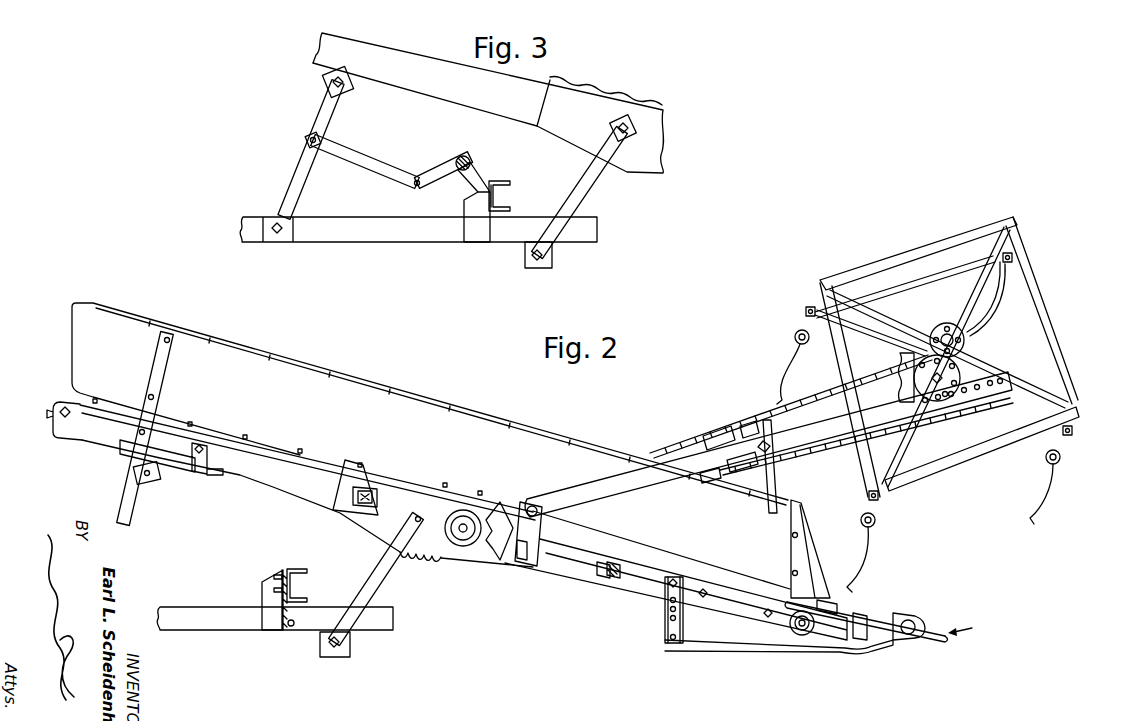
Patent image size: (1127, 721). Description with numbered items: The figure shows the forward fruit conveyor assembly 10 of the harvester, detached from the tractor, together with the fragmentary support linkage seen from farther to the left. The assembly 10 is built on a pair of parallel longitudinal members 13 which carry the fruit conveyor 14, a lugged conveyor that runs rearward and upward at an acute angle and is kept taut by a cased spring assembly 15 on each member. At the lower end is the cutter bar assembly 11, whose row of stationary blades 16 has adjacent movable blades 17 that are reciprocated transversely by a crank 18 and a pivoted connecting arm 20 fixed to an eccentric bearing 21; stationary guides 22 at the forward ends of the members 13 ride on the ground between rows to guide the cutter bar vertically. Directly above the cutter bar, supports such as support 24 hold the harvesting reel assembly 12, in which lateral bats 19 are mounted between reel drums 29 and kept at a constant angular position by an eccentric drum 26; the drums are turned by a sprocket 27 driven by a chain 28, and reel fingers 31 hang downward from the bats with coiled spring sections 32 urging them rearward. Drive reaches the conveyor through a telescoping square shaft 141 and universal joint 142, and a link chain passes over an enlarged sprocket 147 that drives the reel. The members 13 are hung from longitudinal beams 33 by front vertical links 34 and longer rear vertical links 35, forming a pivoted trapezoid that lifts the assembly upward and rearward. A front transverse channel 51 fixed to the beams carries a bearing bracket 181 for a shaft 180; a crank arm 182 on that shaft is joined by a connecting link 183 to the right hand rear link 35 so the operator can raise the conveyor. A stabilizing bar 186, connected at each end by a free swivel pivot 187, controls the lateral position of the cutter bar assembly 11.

In FIG. 3, the fruit conveyor assembly 10 is at (670, 142).
In FIG. 2, the fruit conveyor assembly 10 is at (507, 415).
In FIG. 2, the cutter bar assembly 11 is at (970, 627).
In FIG. 2, the harvesting reel assembly 12 is at (960, 466).
In FIG. 3, the longitudinal members 13 is at (493, 102).
In FIG. 2, the longitudinal members 13 is at (280, 486).
In FIG. 2, the fruit conveyor 14 is at (271, 457).
In FIG. 2, the spring assembly 15 is at (178, 472).
In FIG. 2, the stationary blades 16 is at (937, 633).
In FIG. 2, the movable blades 17 is at (933, 642).
In FIG. 2, the crank 18 is at (500, 504).
In FIG. 2, the lateral bats 19 is at (1013, 258).
In FIG. 2, the pivoted connecting arm 20 is at (569, 554).
In FIG. 2, the eccentric bearing 21 is at (471, 549).
In FIG. 2, the stationary guides 22 is at (768, 652).
In FIG. 2, the support 24 is at (828, 448).
In FIG. 2, the eccentric drum 26 is at (1050, 299).
In FIG. 2, the sprocket 27 is at (899, 380).
In FIG. 2, the chain 28 is at (681, 446).
In FIG. 2, the reel drums 29 is at (1010, 316).
In FIG. 2, the reel fingers 31 is at (789, 373).
In FIG. 2, the coiled spring sections 32 is at (795, 340).
In FIG. 3, the longitudinal beams 33 is at (588, 243).
In FIG. 2, the longitudinal beams 33 is at (381, 631).
In FIG. 3, the front vertical links 34 is at (592, 196).
In FIG. 2, the front vertical links 34 is at (386, 587).
In FIG. 3, the rear vertical links 35 is at (305, 193).
In FIG. 2, the rear vertical links 35 is at (142, 515).
In FIG. 3, the front transverse channel 51 is at (505, 190).
In FIG. 2, the front transverse channel 51 is at (297, 569).
In FIG. 2, the telescoping square shaft 141 is at (379, 498).
In FIG. 2, the universal joint 142 is at (352, 508).
In FIG. 2, the enlarged sprocket 147 is at (438, 570).
In FIG. 3, the shaft 180 is at (470, 160).
In FIG. 3, the bearing bracket 181 is at (486, 174).
In FIG. 3, the crank arm 182 is at (437, 187).
In FIG. 3, the connecting link 183 is at (377, 160).
In FIG. 2, the stabilizing bar 186 is at (612, 580).
In FIG. 2, the free swivel pivot 187 is at (631, 572).